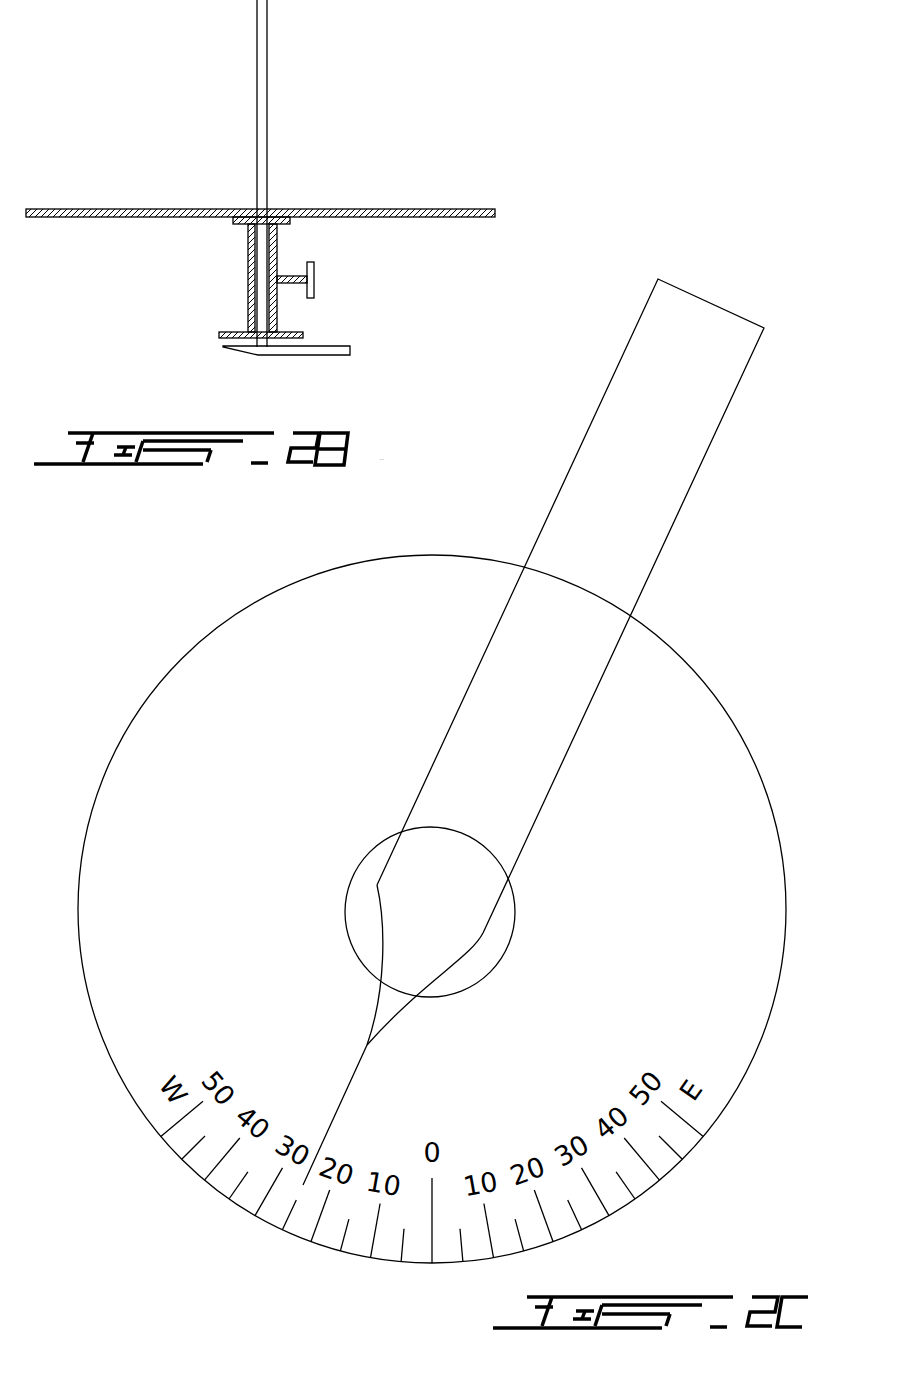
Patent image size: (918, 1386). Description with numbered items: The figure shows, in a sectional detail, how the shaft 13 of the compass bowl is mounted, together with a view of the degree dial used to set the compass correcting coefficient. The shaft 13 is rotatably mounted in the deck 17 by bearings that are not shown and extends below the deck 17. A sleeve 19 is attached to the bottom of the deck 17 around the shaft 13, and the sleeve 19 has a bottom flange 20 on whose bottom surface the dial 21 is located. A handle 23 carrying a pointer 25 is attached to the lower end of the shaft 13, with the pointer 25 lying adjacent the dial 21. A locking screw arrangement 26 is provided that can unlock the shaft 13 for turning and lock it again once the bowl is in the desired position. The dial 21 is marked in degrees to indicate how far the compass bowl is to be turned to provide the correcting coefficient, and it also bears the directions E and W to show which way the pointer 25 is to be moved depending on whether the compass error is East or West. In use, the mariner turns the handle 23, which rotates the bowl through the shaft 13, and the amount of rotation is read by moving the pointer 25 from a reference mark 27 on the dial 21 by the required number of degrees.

In FIG. 2B, the shaft 13 is at (270, 105).
In FIG. 2B, the deck 17 is at (415, 209).
In FIG. 2B, the sleeve 19 is at (238, 250).
In FIG. 2B, the bottom flange 20 is at (202, 325).
In FIG. 2C, the dial 21 is at (775, 1022).
In FIG. 2B, the handle 23 is at (357, 368).
In FIG. 2C, the handle 23 is at (705, 488).
In FIG. 2C, the pointer 25 is at (326, 1087).
In FIG. 2B, the locking screw arrangement 26 is at (326, 267).
In FIG. 2C, the reference mark 27 is at (433, 1280).